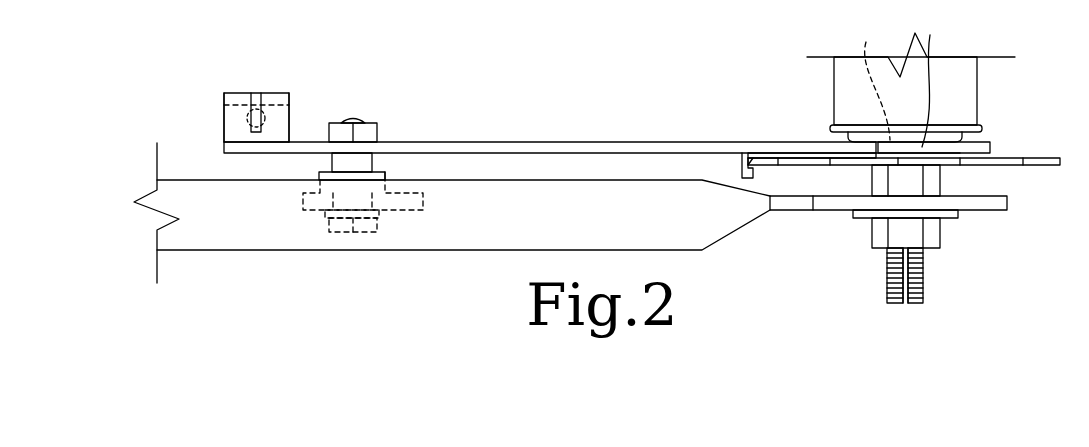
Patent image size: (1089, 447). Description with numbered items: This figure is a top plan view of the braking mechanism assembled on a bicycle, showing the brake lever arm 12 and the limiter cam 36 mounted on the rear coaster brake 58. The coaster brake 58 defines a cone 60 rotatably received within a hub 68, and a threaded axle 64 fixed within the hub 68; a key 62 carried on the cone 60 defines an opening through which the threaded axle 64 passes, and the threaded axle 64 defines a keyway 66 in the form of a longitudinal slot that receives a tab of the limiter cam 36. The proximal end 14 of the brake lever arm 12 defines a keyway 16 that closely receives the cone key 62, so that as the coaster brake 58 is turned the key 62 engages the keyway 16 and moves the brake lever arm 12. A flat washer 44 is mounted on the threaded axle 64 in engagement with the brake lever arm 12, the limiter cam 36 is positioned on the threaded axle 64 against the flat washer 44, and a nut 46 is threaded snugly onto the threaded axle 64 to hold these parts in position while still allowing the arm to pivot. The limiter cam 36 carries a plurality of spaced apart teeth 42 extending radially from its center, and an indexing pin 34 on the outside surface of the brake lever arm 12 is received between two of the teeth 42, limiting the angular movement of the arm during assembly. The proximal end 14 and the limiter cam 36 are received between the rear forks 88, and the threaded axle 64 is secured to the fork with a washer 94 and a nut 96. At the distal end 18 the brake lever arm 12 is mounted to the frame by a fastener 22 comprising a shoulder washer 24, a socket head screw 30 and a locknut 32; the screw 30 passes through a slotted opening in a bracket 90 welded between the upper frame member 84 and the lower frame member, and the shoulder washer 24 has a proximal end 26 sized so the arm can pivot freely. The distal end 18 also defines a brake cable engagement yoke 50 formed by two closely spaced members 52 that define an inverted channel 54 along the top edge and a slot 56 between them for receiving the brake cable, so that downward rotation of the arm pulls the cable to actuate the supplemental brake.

The brake lever arm 12 is at (515, 143).
The proximal end 14 is at (770, 142).
The keyway 16 is at (872, 80).
The distal end 18 is at (230, 153).
The fastener 22 is at (360, 120).
The shoulder washer 24 is at (317, 173).
The proximal end 26 is at (388, 178).
The socket head screw 30 is at (360, 232).
The locknut 32 is at (377, 135).
The indexing pin 34 is at (742, 170).
The limiter cam 36 is at (827, 145).
The teeth 42 is at (1023, 158).
The flat washer 44 is at (990, 150).
The nut 46 is at (913, 182).
The brake cable engagement yoke 50 is at (230, 93).
The members 52 is at (289, 117).
The inverted channel 54 is at (226, 105).
The slot 56 is at (257, 98).
The coaster brake 58 is at (963, 77).
The cone 60 is at (862, 128).
The key 62 is at (933, 78).
The threaded axle 64 is at (927, 288).
The keyway 66 is at (905, 292).
The hub 68 is at (977, 83).
The upper frame member 84 is at (508, 237).
The rear forks 88 is at (1003, 200).
The bracket 90 is at (410, 210).
The washer 94 is at (947, 215).
The nut 96 is at (930, 237).